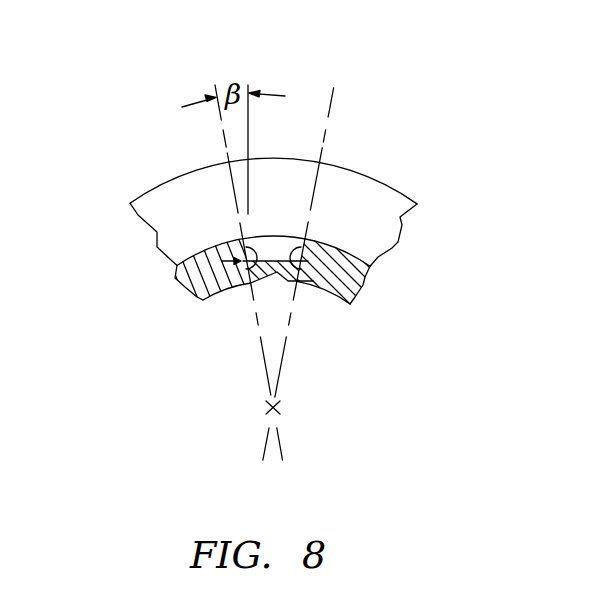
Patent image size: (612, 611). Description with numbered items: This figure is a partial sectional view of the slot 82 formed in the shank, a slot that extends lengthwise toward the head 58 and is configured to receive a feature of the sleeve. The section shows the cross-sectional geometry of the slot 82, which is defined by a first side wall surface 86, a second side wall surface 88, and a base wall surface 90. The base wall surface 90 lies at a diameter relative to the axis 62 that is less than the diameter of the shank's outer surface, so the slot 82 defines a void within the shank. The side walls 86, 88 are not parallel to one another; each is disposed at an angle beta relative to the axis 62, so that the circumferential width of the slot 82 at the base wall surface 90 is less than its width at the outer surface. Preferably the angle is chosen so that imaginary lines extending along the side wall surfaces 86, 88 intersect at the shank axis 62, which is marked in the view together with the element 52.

The outer surface of body 52 is at (395, 188).
The head 58 is at (163, 212).
The slot 82 is at (195, 298).
The first side wall surface 86 is at (237, 286).
The second side wall surface 88 is at (305, 287).
The base wall surface 90 is at (273, 237).
The axis 62 is at (268, 408).